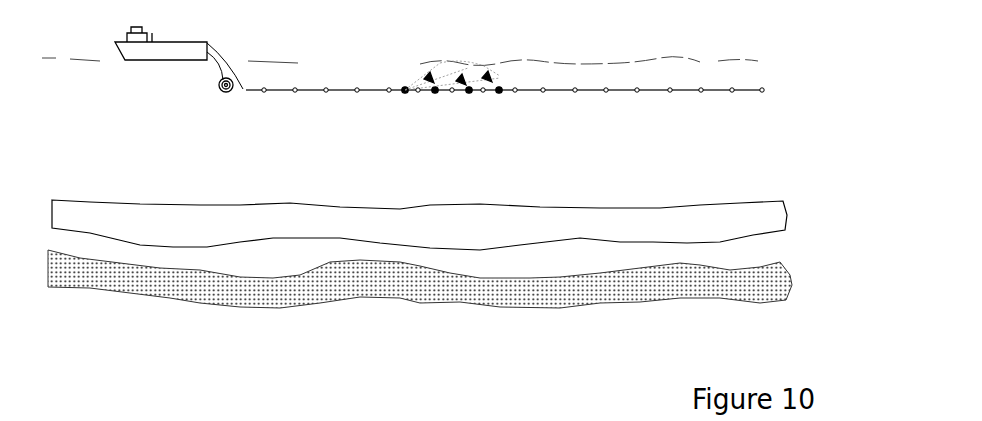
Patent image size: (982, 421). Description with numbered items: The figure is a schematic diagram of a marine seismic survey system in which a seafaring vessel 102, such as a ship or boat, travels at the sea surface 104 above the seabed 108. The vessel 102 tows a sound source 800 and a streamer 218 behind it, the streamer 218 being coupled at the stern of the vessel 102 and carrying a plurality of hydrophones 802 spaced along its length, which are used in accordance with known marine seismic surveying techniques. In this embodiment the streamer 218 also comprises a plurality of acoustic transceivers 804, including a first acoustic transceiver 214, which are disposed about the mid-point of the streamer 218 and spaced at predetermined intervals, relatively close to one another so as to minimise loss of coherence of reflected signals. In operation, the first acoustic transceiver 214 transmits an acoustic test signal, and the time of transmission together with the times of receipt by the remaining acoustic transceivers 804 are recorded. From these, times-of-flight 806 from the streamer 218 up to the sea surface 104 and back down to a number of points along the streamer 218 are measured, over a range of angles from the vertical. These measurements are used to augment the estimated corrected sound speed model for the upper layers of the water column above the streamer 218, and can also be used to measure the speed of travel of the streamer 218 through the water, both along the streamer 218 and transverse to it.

The seafaring vessel 102 is at (184, 42).
The sea surface 104 is at (678, 58).
The seabed 108 is at (660, 208).
The acoustic transceiver 214 is at (405, 92).
The streamer 218 is at (223, 56).
The sound source 800 is at (222, 88).
The hydrophones 802 is at (295, 91).
The acoustic transceivers 804 is at (435, 92).
The times-of-flight 806 is at (412, 74).